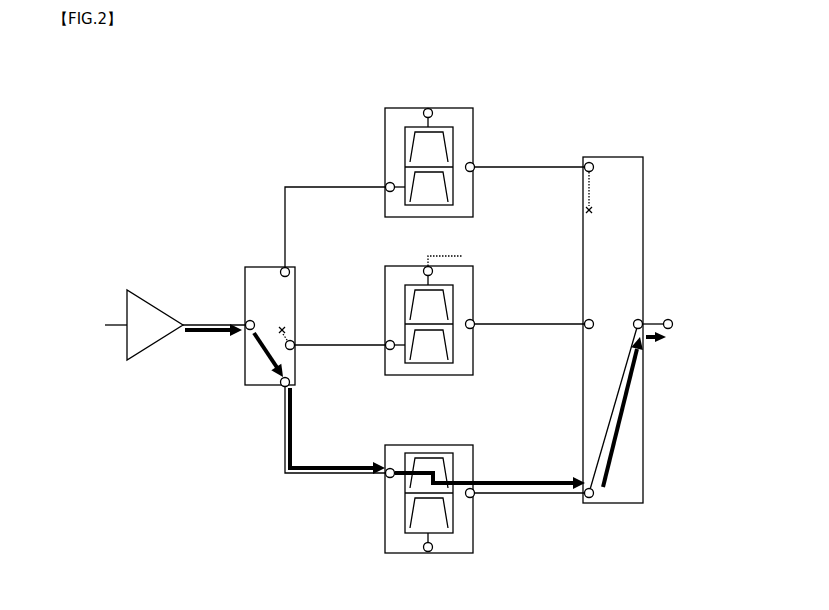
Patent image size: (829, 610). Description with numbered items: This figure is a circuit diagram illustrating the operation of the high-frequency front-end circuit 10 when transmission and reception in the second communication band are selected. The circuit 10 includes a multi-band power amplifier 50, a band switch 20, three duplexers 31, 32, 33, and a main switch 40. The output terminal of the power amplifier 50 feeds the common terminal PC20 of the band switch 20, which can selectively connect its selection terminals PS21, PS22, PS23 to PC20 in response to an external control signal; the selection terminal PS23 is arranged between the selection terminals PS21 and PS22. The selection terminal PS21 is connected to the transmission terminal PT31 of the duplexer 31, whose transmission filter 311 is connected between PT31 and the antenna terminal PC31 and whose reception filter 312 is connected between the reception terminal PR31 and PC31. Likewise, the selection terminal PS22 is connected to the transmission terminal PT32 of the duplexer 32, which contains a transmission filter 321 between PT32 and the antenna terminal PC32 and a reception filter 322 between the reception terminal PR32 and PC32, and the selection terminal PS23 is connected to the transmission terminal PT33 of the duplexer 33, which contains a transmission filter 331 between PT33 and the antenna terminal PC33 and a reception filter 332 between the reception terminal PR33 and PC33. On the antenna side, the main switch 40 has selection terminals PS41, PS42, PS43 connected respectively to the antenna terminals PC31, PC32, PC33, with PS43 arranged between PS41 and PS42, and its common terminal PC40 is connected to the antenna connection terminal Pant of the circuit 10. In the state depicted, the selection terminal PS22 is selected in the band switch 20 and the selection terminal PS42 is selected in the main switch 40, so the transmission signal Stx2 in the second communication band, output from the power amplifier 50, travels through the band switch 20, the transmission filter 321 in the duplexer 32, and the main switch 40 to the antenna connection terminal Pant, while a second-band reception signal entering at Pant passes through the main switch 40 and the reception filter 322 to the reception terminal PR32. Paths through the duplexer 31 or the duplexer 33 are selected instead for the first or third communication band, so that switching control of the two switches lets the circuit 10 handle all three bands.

The high-frequency front-end circuit 10 is at (658, 102).
The band switch 20 is at (245, 270).
The multi-band power amplifier 50 is at (152, 303).
The duplexer 31 is at (458, 107).
The duplexer 32 is at (465, 553).
The duplexer 33 is at (464, 266).
The main switch 40 is at (643, 217).
The transmission filter 311 is at (455, 195).
The reception filter 312 is at (455, 135).
The transmission filter 321 is at (455, 460).
The reception filter 322 is at (455, 522).
The transmission filter 331 is at (455, 358).
The reception filter 332 is at (455, 290).
The reception terminal PR31 is at (426, 109).
The reception terminal PR32 is at (425, 552).
The reception terminal PR33 is at (424, 268).
The transmission terminal PT31 is at (387, 183).
The transmission terminal PT32 is at (387, 469).
The transmission terminal PT33 is at (387, 349).
The antenna terminal PC31 is at (474, 164).
The antenna terminal PC32 is at (474, 497).
The antenna terminal PC33 is at (474, 328).
The common terminal PC20 is at (246, 320).
The common terminal PC40 is at (641, 320).
The selection terminal PS21 is at (283, 267).
The selection terminal PS22 is at (283, 387).
The selection terminal PS23 is at (294, 341).
The selection terminal PS41 is at (591, 162).
The selection terminal PS42 is at (592, 498).
The selection terminal PS43 is at (586, 321).
The antenna connection terminal Pant is at (672, 328).
The transmission signal Stx2 is at (210, 338).